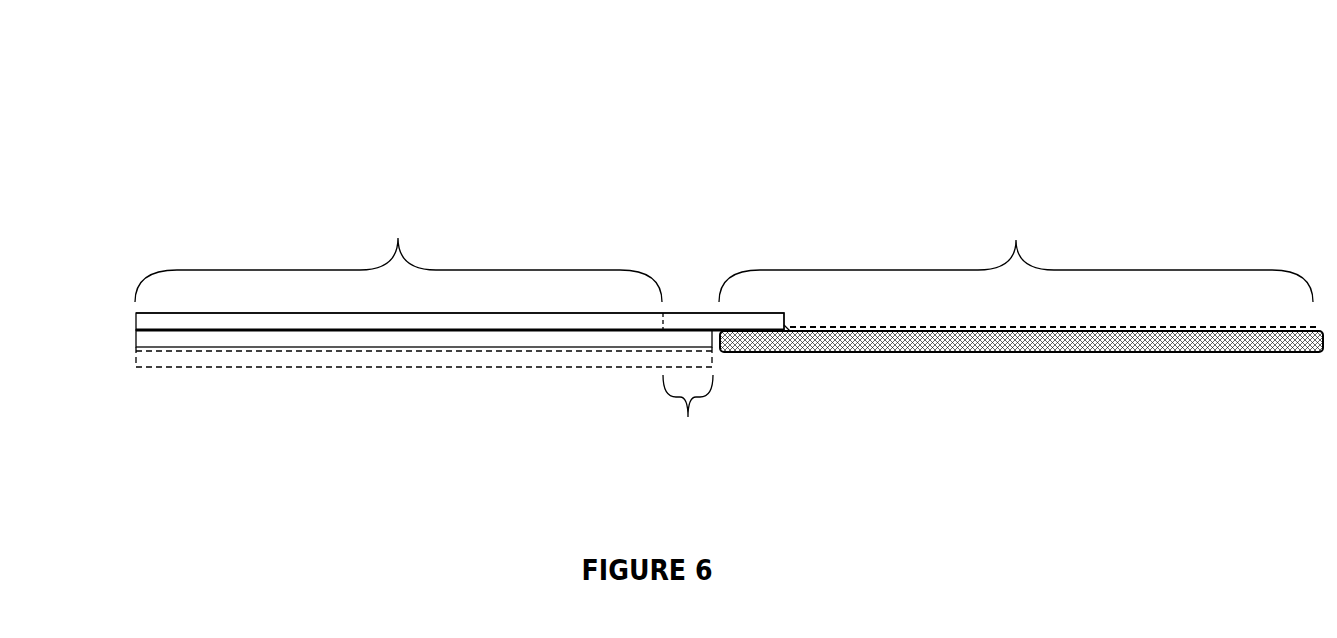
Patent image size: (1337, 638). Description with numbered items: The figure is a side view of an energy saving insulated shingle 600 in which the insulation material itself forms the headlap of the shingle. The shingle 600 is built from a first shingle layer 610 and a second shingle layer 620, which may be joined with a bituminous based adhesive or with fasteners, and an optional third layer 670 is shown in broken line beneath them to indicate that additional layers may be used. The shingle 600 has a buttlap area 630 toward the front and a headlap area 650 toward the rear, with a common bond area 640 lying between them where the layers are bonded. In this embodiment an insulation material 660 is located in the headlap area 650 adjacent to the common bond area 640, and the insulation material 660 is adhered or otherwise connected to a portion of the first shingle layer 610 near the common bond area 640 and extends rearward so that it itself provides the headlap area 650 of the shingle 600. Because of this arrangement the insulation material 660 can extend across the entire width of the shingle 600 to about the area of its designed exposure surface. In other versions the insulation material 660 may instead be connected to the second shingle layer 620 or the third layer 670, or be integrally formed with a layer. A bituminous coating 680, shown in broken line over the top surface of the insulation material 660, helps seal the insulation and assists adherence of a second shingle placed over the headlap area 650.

The energy saving insulated shingle 600 is at (738, 175).
The first shingle layer 610 is at (215, 317).
The second shingle layer 620 is at (408, 345).
The buttlap area 630 is at (398, 251).
The common bond area 640 is at (688, 416).
The headlap area 650 is at (1019, 264).
The insulation material 660 is at (1020, 352).
The third layer 670 is at (492, 362).
The bituminous coating 680 is at (787, 325).